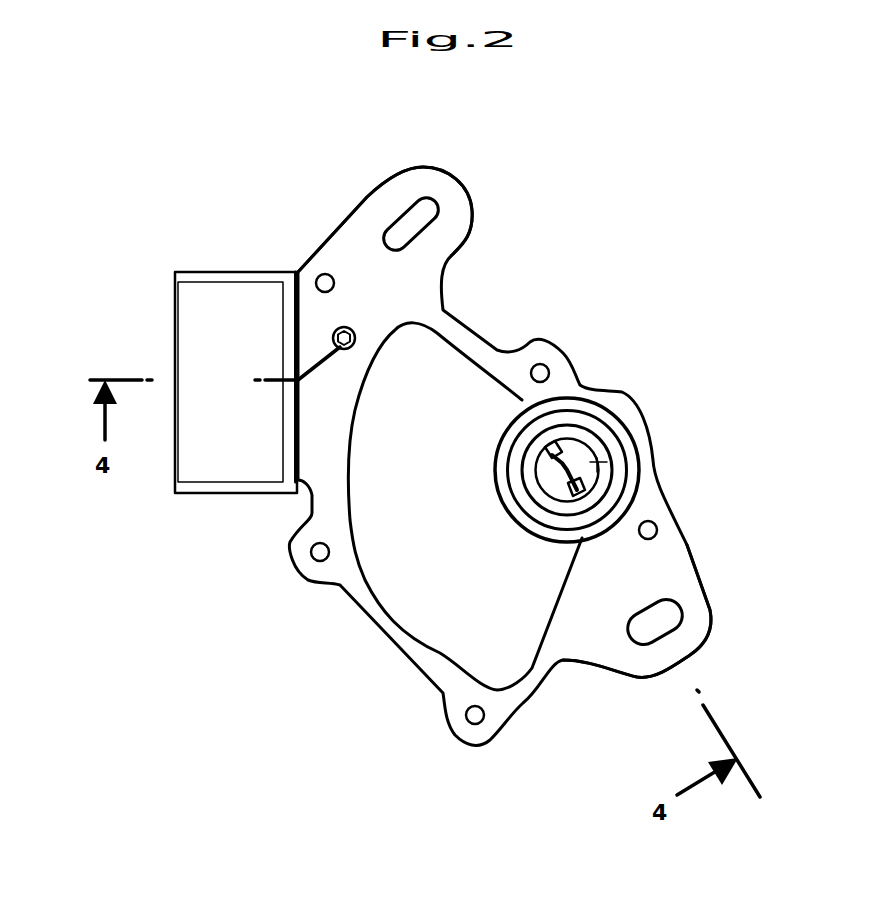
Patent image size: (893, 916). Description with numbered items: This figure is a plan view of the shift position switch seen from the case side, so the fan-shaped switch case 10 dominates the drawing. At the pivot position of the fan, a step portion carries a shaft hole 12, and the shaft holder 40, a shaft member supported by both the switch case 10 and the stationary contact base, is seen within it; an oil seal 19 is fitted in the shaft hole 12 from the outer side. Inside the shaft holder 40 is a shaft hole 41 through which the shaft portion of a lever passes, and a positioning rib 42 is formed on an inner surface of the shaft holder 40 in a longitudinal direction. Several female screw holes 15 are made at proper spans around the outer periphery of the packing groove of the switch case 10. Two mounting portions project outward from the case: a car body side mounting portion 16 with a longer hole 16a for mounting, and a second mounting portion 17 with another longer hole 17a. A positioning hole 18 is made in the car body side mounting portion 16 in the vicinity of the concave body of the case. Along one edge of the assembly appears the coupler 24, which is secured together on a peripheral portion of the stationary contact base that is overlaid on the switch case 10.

The switch case 10 is at (368, 650).
The shaft hole 12 is at (565, 437).
The female screw holes 15 is at (323, 275).
The car body side mounting portion 16 is at (368, 198).
The longer hole 16a is at (433, 212).
The mounting portion 17 is at (610, 668).
The longer hole 17a is at (658, 633).
The positioning hole 18 is at (357, 343).
The oil seal 19 is at (577, 417).
The coupler 24 is at (200, 272).
The shaft holder 40 is at (592, 433).
The shaft hole 41 is at (595, 460).
The positioning rib 42 is at (595, 470).